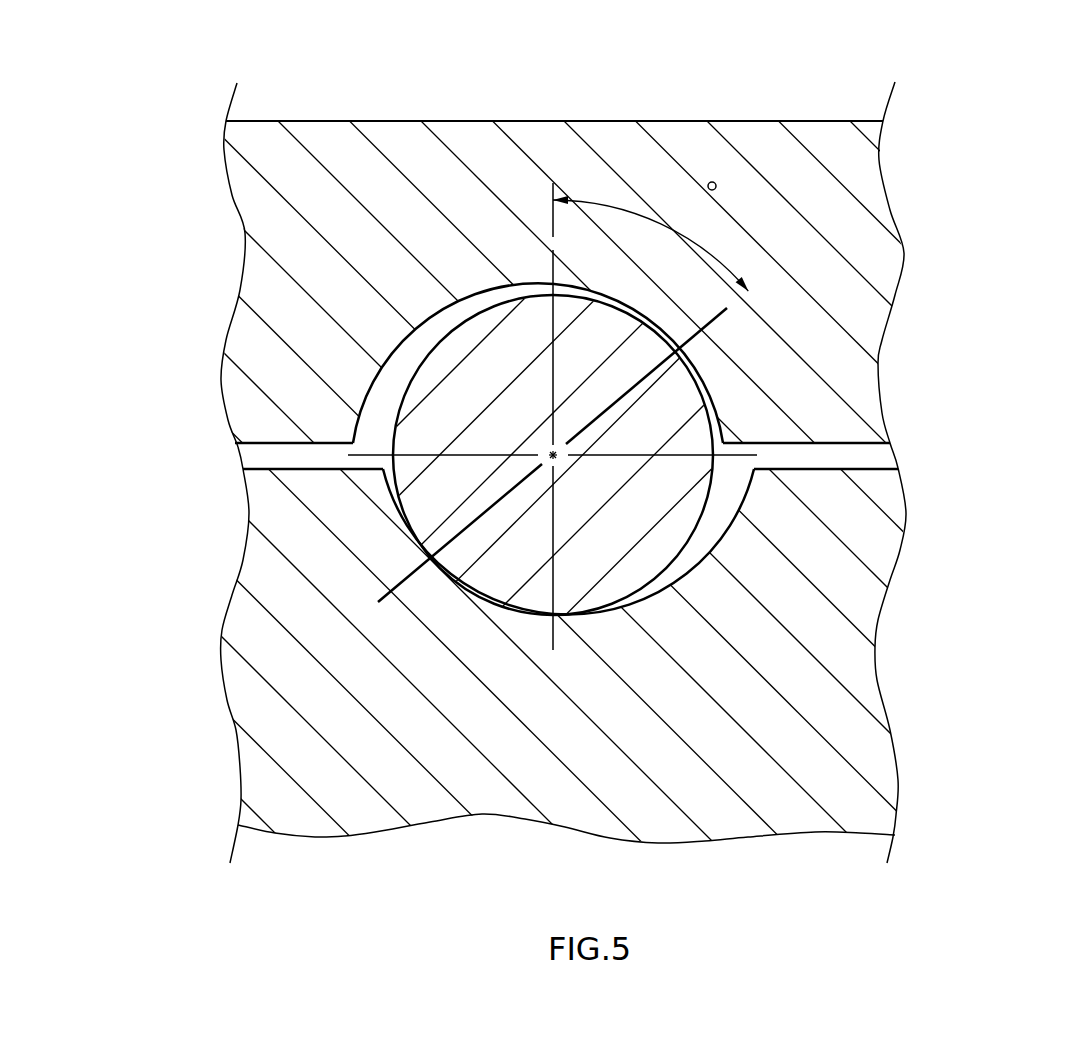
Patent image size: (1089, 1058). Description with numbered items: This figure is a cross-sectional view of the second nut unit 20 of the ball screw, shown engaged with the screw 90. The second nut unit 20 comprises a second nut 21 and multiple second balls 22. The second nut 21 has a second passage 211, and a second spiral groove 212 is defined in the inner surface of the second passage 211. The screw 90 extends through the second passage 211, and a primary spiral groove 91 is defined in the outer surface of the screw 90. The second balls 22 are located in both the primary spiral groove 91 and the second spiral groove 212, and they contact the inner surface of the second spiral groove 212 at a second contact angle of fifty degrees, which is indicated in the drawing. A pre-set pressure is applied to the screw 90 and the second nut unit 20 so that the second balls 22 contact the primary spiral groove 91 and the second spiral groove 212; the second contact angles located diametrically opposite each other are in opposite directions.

The second nut unit 20 is at (544, 469).
The second nut 21 is at (792, 162).
The second passage 211 is at (290, 453).
The second spiral groove 212 is at (386, 354).
The second balls 22 is at (660, 539).
The screw 90 is at (270, 707).
The primary spiral groove 91 is at (383, 470).